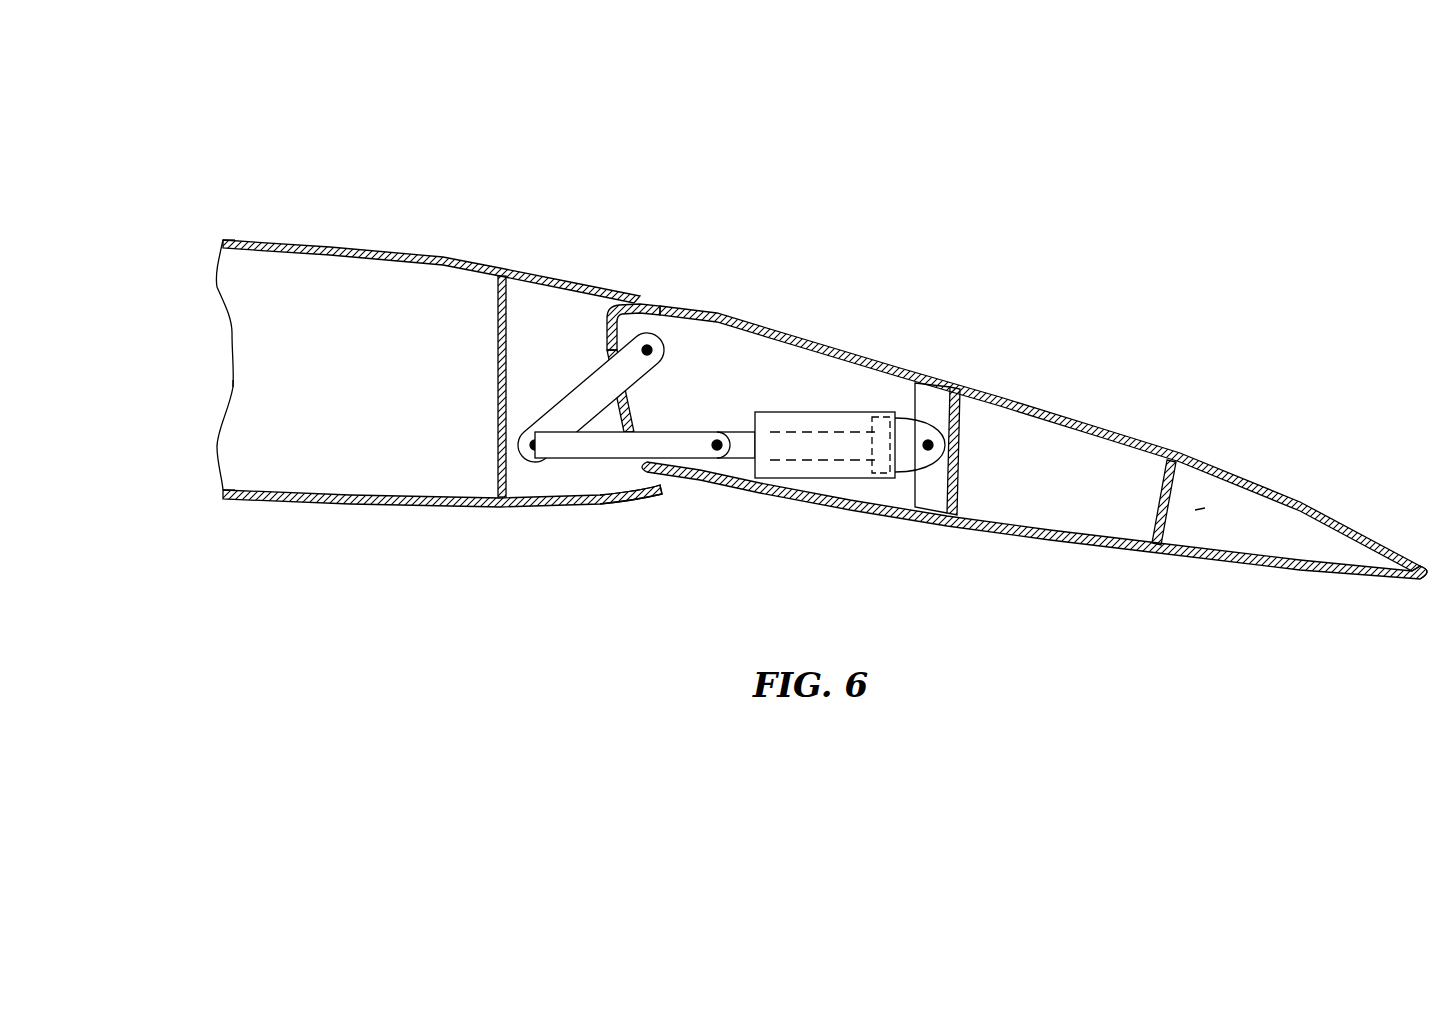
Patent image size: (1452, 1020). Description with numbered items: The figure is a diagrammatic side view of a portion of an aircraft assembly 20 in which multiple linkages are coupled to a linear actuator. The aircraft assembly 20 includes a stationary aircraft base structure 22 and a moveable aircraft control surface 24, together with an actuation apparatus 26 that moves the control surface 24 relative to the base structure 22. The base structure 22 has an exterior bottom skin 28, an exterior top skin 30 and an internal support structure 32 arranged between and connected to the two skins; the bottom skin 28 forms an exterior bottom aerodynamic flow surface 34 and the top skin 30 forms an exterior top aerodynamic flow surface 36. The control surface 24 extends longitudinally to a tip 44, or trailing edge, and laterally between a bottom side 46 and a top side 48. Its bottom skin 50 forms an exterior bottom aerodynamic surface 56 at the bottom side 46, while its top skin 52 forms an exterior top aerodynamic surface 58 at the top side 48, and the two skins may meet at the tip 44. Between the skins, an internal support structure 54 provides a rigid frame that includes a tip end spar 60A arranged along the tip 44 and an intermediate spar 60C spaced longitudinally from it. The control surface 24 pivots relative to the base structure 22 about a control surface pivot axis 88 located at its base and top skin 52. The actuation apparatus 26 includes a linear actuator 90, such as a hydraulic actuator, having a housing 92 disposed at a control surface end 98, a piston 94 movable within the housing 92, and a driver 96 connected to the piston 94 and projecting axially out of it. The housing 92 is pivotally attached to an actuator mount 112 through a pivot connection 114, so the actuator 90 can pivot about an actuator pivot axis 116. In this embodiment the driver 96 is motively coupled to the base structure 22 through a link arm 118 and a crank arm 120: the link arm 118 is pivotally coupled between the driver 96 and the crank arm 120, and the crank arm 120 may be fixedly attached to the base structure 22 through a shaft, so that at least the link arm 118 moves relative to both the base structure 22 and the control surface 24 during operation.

The aircraft assembly 20 is at (270, 115).
The aircraft base structure 22 is at (428, 222).
The aircraft control surface 24 is at (1063, 405).
The actuation apparatus 26 is at (735, 385).
The exterior bottom skin 28 is at (222, 493).
The exterior top skin 30 is at (220, 240).
The internal support structure 32 is at (225, 353).
The exterior bottom aerodynamic flow surface 34 is at (278, 500).
The exterior top aerodynamic flow surface 36 is at (273, 240).
The tip 44 is at (1433, 574).
The bottom side 46 is at (1034, 558).
The top side 48 is at (1040, 438).
The control surface bottom skin 50 is at (1176, 557).
The control surface top skin 52 is at (1205, 455).
The control surface support structure 54 is at (1195, 510).
The exterior bottom aerodynamic surface 56 is at (1298, 577).
The exterior top aerodynamic surface 58 is at (1320, 505).
The tip end spar 60A is at (1160, 518).
The intermediate spar 60C is at (962, 428).
The control surface pivot axis 88 is at (670, 327).
The linear actuator 90 is at (840, 405).
The housing 92 is at (837, 480).
The piston 94 is at (883, 478).
The driver 96 is at (742, 460).
The control surface end 98 is at (962, 453).
The actuator mount 112 is at (938, 385).
The pivot connection 114 is at (958, 483).
The actuator pivot axis 116 is at (927, 457).
The link arm 118 is at (600, 460).
The crank arm 120 is at (567, 395).